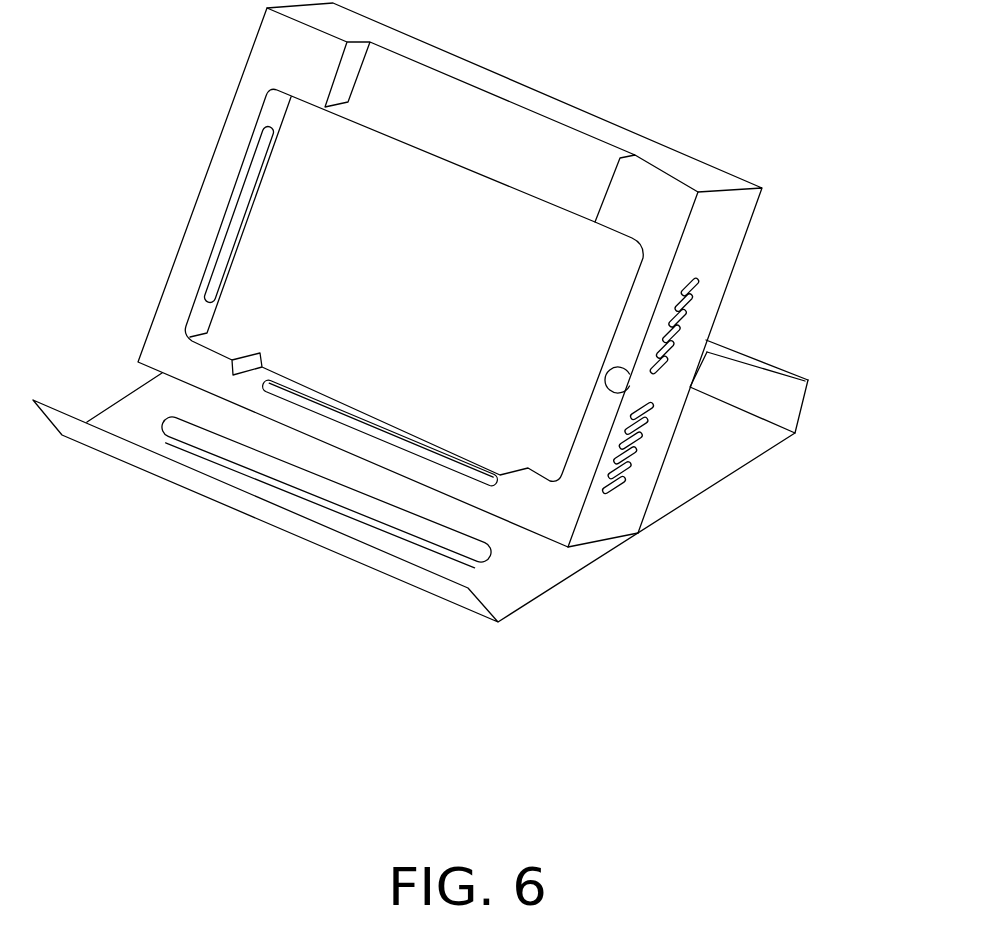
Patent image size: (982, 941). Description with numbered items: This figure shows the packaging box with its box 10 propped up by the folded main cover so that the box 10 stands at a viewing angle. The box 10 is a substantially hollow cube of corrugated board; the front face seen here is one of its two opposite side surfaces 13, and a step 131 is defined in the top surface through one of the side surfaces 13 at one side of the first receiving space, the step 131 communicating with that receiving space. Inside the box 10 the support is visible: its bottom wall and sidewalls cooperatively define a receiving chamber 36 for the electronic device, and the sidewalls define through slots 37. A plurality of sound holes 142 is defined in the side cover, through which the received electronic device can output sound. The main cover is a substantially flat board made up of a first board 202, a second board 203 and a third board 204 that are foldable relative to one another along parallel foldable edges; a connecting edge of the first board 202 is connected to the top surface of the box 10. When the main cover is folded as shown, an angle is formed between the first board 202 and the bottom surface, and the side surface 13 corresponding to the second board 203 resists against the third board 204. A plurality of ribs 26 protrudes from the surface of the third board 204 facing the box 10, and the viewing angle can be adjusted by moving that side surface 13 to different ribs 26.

The box 10 is at (685, 173).
The side surface 13 is at (603, 540).
The step 131 is at (520, 128).
The receiving chamber 36 is at (292, 185).
The through slot 37 is at (227, 243).
The sound holes 142 is at (647, 420).
The first board 202 is at (730, 352).
The second board 203 is at (787, 403).
The third board 204 is at (540, 577).
The ribs 26 is at (422, 530).